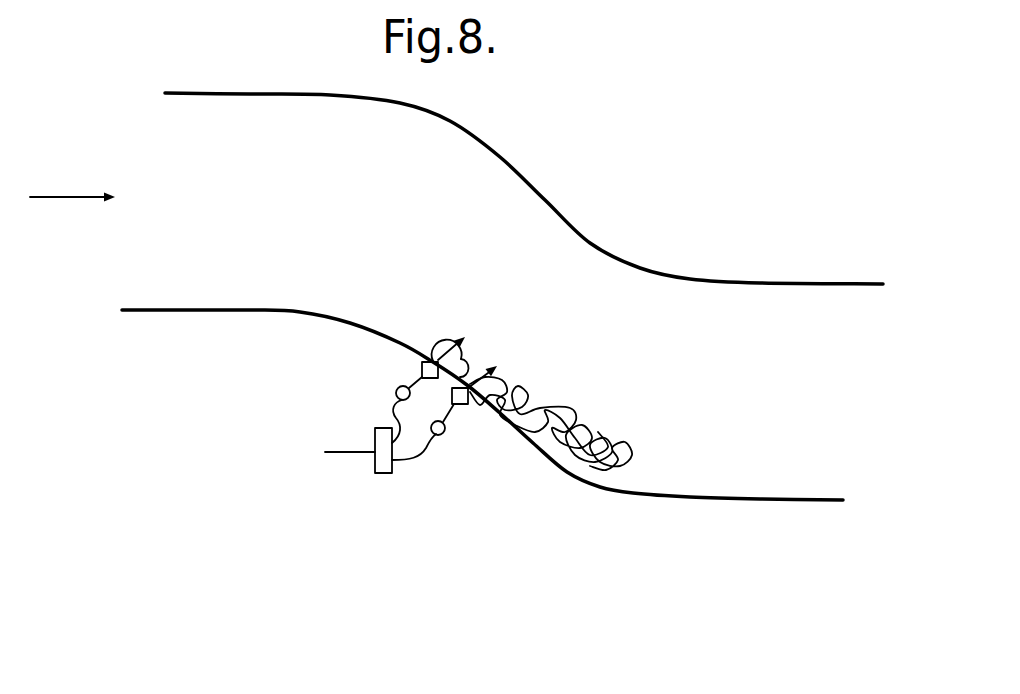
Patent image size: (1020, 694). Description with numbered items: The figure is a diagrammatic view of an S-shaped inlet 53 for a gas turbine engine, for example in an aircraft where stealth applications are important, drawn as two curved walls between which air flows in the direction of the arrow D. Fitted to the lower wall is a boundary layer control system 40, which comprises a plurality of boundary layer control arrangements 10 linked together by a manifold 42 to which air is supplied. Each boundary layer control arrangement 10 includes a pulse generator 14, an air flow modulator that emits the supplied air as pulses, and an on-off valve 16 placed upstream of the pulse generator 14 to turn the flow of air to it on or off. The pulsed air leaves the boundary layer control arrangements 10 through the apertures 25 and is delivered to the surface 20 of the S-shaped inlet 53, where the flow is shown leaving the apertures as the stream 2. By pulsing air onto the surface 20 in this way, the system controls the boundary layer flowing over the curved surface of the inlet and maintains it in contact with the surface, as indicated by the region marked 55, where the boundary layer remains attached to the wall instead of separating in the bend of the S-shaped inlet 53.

The adhesive jet / spray stream 2 is at (470, 358).
The boundary layer control arrangement 10 is at (368, 357).
The pulse generator 14 is at (423, 362).
The valve 16 is at (396, 392).
The surface 20 is at (690, 497).
The apertures 25 is at (446, 352).
The boundary layer control system 40 is at (475, 458).
The manifold 42 is at (387, 474).
The S-shaped inlet 53 is at (198, 295).
The boundary layer maintained in contact with the surface 55 is at (550, 438).
The direction of air flow D is at (58, 196).